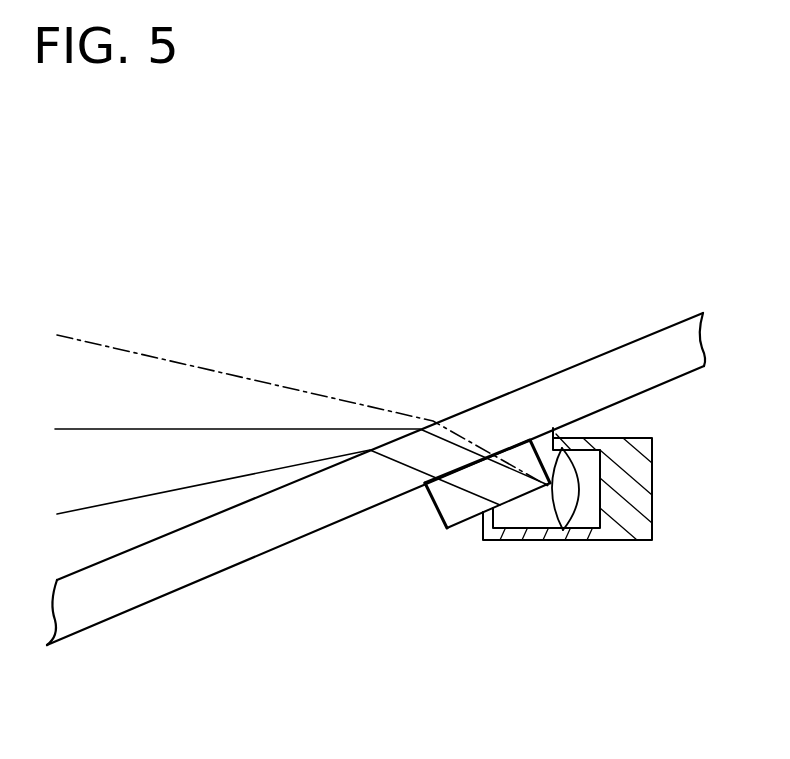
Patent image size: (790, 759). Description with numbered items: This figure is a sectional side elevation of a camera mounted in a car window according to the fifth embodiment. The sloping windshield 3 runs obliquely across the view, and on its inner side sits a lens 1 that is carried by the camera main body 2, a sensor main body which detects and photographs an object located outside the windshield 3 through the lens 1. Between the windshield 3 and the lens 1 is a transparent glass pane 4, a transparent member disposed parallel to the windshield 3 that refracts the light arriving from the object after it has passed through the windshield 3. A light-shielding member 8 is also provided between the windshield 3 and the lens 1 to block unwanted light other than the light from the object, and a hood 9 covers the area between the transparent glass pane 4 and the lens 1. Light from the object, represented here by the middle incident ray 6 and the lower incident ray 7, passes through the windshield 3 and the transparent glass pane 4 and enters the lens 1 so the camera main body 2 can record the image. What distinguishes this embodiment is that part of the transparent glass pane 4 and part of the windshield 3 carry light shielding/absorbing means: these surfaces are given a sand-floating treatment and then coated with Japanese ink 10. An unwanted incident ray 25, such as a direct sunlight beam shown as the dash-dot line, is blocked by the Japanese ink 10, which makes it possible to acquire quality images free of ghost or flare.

The lens 1 is at (573, 517).
The camera main body 2 is at (652, 510).
The windshield 3 is at (599, 355).
The transparent glass pane 4 is at (445, 498).
The middle incident ray 6 is at (212, 429).
The lower incident ray 7 is at (126, 499).
The light-shielding member 8 is at (505, 450).
The hood 9 is at (530, 541).
The Japanese ink 10 is at (545, 484).
The unwanted incident ray 25 is at (294, 389).